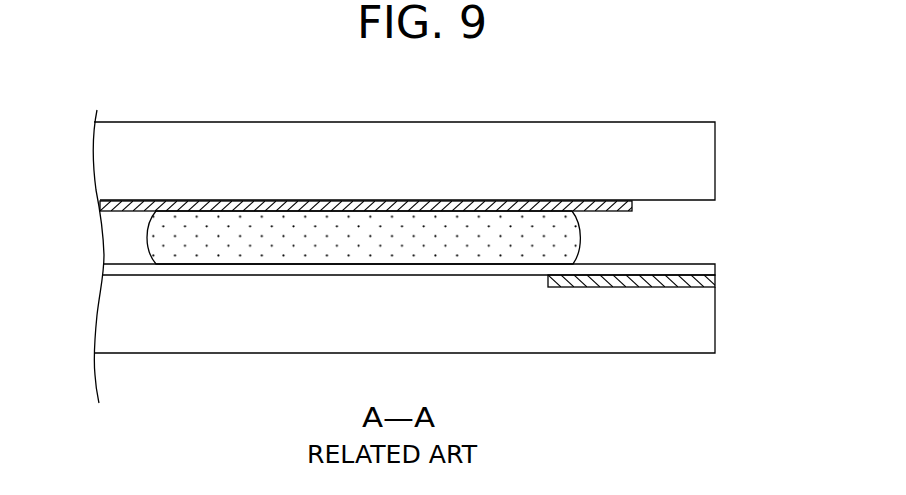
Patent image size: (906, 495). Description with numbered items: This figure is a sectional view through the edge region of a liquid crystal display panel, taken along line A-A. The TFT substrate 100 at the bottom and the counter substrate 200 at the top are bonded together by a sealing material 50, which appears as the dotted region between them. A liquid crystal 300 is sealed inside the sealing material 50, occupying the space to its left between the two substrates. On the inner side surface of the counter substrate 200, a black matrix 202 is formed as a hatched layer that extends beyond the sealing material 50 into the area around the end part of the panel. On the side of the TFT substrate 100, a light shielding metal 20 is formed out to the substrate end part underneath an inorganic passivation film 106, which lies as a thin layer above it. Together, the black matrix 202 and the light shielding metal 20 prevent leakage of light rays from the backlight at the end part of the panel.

The liquid crystal 300 is at (117, 242).
The counter substrate 200 is at (652, 121).
The black matrix 202 is at (573, 220).
The sealing material 50 is at (423, 228).
The inorganic passivation film 106 is at (707, 269).
The light shielding metal 20 is at (708, 285).
The TFT substrate 100 is at (638, 345).